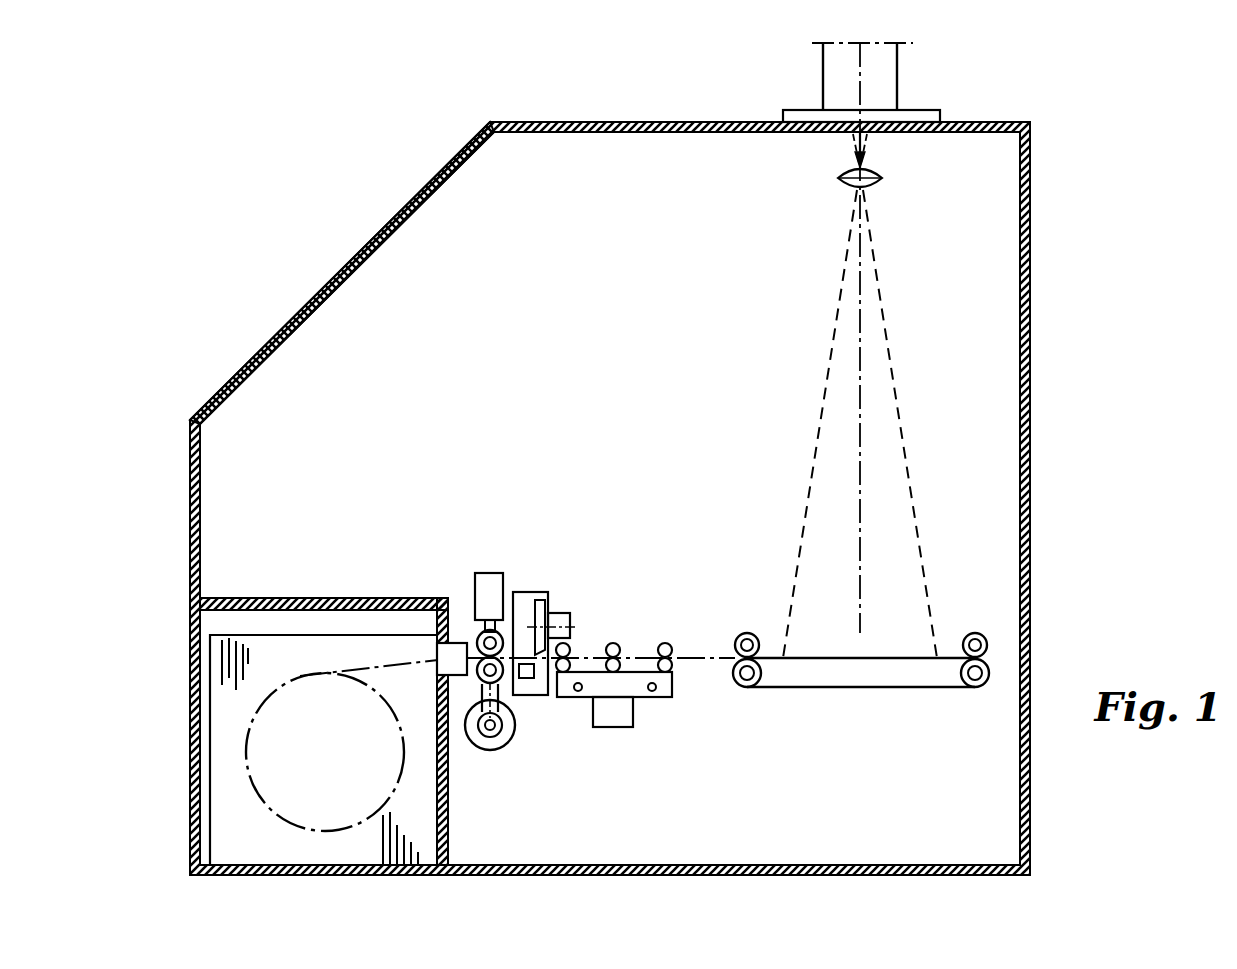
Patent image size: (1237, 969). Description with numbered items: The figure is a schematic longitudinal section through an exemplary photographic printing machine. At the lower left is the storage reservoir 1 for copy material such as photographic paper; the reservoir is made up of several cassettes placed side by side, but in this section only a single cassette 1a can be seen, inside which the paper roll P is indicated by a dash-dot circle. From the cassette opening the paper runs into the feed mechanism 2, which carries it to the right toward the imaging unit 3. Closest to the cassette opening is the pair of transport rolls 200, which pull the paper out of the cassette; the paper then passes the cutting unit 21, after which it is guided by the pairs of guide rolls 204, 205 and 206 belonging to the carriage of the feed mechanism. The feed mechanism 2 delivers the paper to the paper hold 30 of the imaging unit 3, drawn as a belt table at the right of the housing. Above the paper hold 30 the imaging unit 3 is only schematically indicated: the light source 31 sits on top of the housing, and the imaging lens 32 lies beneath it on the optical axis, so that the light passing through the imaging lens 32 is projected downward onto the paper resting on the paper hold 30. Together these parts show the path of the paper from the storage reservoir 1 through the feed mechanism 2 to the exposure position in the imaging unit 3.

The storage reservoir 1 is at (353, 530).
The cassette 1a is at (225, 697).
The photosensitive paper roll P is at (348, 678).
The feed mechanism 2 is at (594, 512).
The pair of transport rolls 200 is at (477, 637).
The cutting unit 21 is at (536, 600).
The pair of guide rolls 204 is at (568, 646).
The pair of guide rolls 205 is at (616, 647).
The pair of guide rolls 206 is at (667, 647).
The imaging unit 3 is at (741, 184).
The paper hold 30 is at (905, 640).
The light source 31 is at (886, 78).
The imaging lens 32 is at (879, 179).